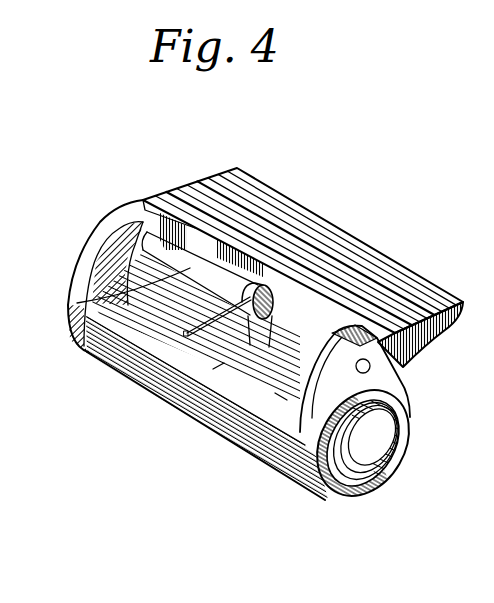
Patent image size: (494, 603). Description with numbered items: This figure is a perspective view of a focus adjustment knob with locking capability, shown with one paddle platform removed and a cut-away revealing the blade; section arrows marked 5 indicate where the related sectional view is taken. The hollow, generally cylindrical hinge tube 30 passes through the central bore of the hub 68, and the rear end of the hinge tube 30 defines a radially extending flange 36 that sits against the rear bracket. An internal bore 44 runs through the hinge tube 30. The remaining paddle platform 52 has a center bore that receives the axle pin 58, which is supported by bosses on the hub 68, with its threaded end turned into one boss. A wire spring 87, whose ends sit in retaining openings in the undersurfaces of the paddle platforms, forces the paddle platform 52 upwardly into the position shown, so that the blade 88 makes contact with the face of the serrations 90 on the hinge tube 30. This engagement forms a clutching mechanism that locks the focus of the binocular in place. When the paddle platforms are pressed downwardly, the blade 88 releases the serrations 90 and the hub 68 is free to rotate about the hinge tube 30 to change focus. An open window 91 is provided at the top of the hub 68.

The hinge tube 30 is at (395, 425).
The radially extending flange 36 is at (81, 275).
The internal bore 44 is at (395, 458).
The paddle platform 52 is at (290, 212).
The axle pin 58 is at (175, 257).
The central hub 68 is at (335, 495).
The wire spring 87 is at (185, 334).
The blade 88 is at (255, 348).
The serrations 90 is at (77, 303).
The open window 91 is at (208, 380).
The section line 5- 5 is at (404, 260).